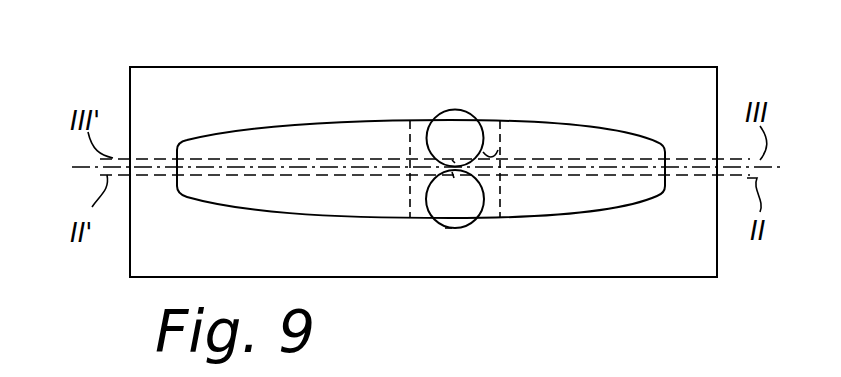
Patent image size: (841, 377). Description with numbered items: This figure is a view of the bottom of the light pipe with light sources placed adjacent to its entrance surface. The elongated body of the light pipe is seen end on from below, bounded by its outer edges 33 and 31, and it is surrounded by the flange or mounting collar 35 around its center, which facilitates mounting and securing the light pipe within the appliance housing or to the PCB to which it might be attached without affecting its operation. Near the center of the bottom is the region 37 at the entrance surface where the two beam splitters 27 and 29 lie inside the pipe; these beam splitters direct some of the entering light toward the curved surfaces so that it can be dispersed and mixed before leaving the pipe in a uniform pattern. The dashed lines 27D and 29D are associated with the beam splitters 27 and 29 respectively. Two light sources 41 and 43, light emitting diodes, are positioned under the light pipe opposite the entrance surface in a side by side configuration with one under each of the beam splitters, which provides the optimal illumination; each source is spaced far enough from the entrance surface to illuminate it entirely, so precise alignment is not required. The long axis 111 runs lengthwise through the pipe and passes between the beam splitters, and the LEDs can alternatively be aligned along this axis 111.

The beam splitter 27 is at (497, 226).
The lower ball diameter 27D is at (452, 172).
The beam splitter 29 is at (495, 135).
The upper ball diameter 29D is at (455, 163).
The lower surface of body 31 is at (345, 218).
The upper surface of body 33 is at (340, 120).
The mounting collar 35 is at (692, 85).
The ball pocket 37 is at (442, 196).
The light source 41 is at (483, 152).
The light source 43 is at (450, 228).
The long axis 111 is at (75, 167).